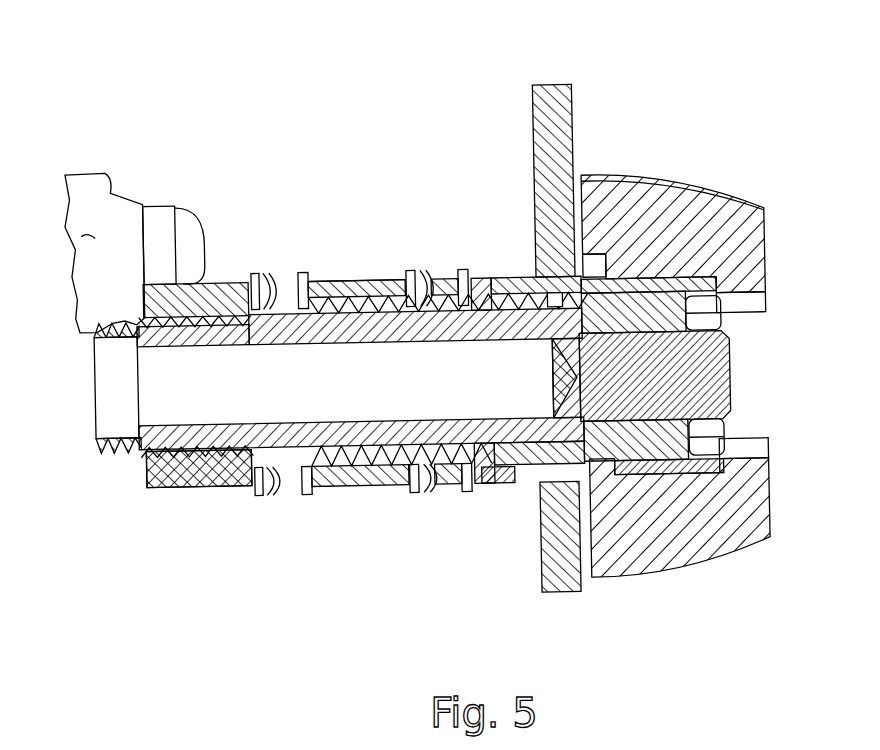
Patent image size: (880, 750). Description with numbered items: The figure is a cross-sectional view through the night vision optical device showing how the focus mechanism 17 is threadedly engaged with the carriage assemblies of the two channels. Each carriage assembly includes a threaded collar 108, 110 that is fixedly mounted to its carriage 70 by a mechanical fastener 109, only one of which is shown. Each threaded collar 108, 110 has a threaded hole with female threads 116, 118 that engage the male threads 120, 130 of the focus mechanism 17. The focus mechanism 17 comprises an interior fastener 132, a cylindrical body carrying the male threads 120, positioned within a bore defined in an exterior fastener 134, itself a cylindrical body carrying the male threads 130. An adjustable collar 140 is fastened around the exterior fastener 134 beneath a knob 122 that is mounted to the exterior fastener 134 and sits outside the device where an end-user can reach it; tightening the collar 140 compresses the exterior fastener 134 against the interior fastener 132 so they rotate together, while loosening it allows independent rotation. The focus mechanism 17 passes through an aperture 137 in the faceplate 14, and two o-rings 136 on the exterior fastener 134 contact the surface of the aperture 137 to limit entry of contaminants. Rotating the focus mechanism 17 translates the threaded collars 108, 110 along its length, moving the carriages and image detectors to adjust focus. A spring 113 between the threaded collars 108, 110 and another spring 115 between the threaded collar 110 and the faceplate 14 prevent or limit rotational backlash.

The faceplate 14 is at (553, 95).
The focus mechanism 17 is at (723, 375).
The carriage 70 is at (85, 238).
The threaded collar 108 is at (158, 215).
The mechanical fastener 109 is at (188, 227).
The threaded collar 110 is at (372, 285).
The spring 113 is at (258, 277).
The spring 115 is at (420, 285).
The female threads 116 is at (198, 490).
The female threads 118 is at (320, 283).
The male threads 120 is at (90, 318).
The knob 122 is at (722, 507).
The male threads 130 is at (275, 278).
The interior fastener 132 is at (675, 368).
The exterior fastener 134 is at (517, 490).
The o-rings 136 is at (542, 290).
The aperture 137 is at (477, 487).
The adjustable collar 140 is at (658, 477).